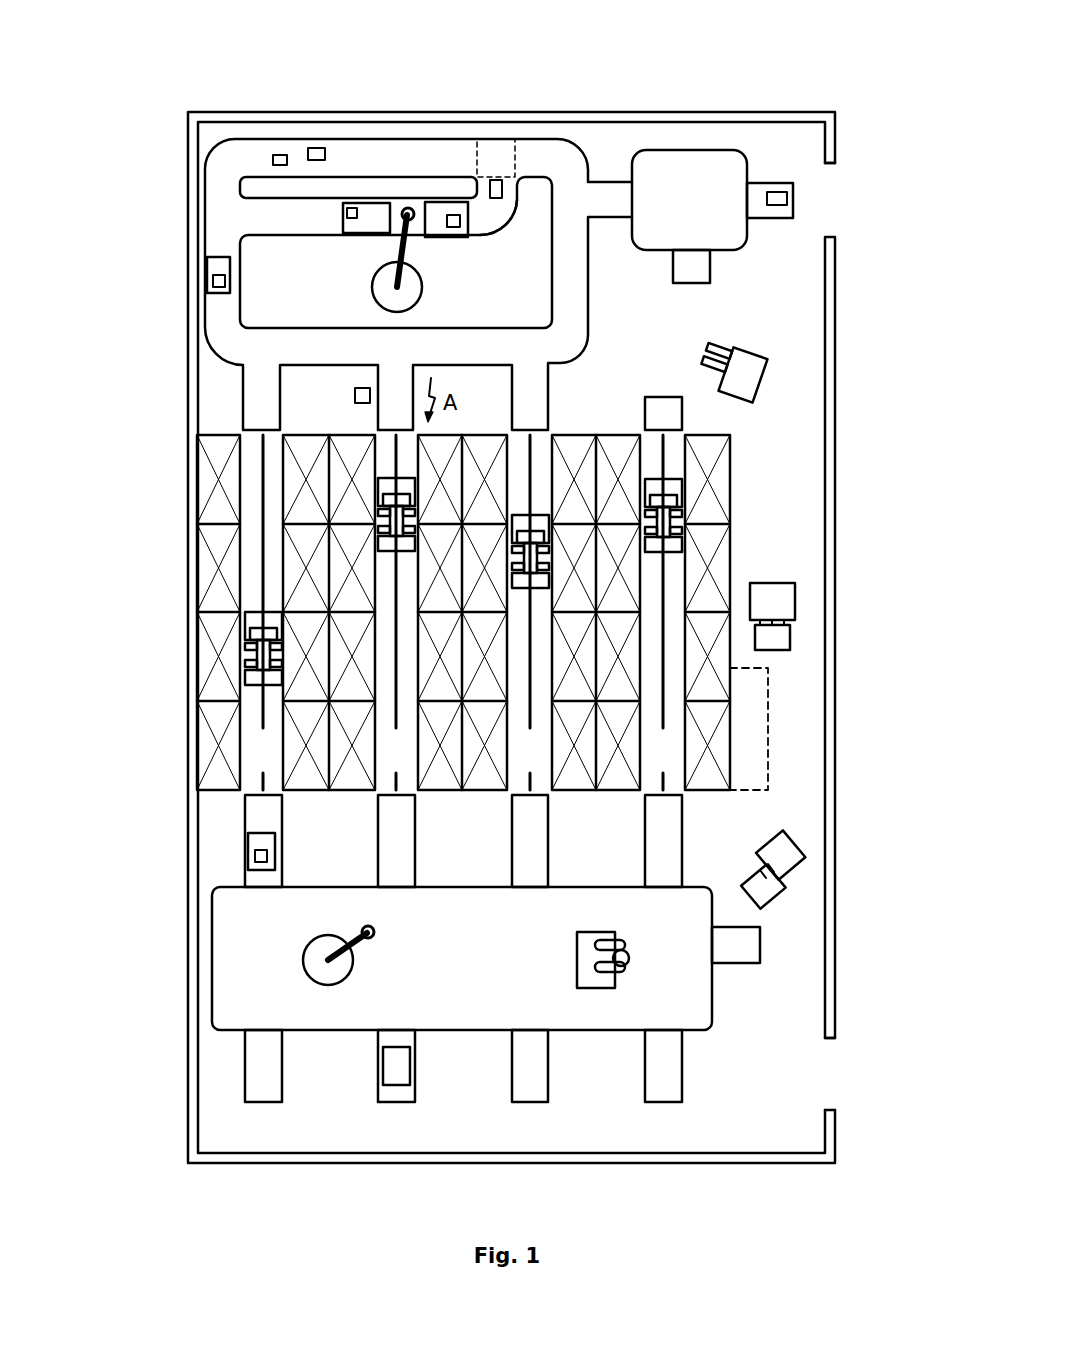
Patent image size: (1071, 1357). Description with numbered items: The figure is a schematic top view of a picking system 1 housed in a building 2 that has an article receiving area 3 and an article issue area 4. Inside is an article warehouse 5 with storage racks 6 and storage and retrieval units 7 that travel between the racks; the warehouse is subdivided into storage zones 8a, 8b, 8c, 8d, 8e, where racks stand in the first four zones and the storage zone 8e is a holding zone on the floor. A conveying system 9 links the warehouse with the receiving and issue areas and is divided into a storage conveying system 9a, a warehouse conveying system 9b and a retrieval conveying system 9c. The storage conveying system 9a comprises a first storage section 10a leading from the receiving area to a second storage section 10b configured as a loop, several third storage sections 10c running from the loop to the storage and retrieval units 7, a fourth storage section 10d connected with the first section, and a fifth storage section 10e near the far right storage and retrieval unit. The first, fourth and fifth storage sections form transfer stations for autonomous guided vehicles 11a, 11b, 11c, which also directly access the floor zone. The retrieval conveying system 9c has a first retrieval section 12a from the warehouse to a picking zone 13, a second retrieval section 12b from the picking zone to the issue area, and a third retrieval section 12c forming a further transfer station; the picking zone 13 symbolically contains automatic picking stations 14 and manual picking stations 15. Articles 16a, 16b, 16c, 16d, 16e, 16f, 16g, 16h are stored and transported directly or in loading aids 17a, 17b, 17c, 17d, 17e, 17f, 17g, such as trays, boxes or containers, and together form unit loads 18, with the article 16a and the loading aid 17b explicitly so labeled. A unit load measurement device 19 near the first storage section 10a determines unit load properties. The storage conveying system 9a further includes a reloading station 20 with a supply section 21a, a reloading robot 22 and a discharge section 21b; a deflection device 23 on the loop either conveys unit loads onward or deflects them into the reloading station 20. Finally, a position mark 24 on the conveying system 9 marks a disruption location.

The picking system 1 is at (908, 116).
The building 2 is at (190, 1133).
The article receiving area 3 is at (848, 193).
The article issue area 4 is at (848, 1073).
The article warehouse 5 is at (245, 560).
The storage racks 6 is at (207, 472).
The storage and retrieval units 7 is at (260, 680).
The storage zone 8a is at (276, 765).
The storage zone 8b is at (410, 765).
The storage zone 8c is at (544, 765).
The storage zone 8d is at (677, 765).
The storage zone 8e is at (762, 765).
The conveying system 9 is at (58, 222).
The storage conveying system 9a is at (123, 143).
The warehouse conveying system 9b is at (123, 440).
The retrieval conveying system 9c is at (123, 798).
The first storage section 10a is at (757, 196).
The second storage section 10b is at (218, 245).
The third storage sections 10c is at (252, 393).
The fourth storage section 10d is at (698, 262).
The fifth storage section 10e is at (650, 410).
The autonomous guided vehicle 11a is at (747, 366).
The autonomous guided vehicle 11b is at (782, 593).
The autonomous guided vehicle 11c is at (786, 848).
The first retrieval section 12a is at (255, 820).
The second retrieval section 12b is at (258, 1068).
The third retrieval section 12c is at (745, 942).
The picking zone 13 is at (480, 960).
The automatic picking stations 14 is at (322, 973).
The manual picking stations 15 is at (598, 985).
The article 16a is at (781, 196).
The article 16b is at (490, 178).
The article 16c is at (453, 227).
The article 16d is at (352, 210).
The article 16e is at (313, 150).
The article 16f is at (278, 156).
The article 16g is at (218, 279).
The article 16h is at (268, 857).
The loading aid 17a is at (438, 212).
The loading aid 17b is at (361, 228).
The loading aid 17c is at (213, 287).
The loading aid 17d is at (266, 843).
The loading aid 17e is at (780, 636).
The loading aid 17f is at (770, 886).
The loading aid 17g is at (400, 1062).
The unit load 18 is at (482, 54).
The unit load measurement device 19 is at (686, 172).
The reloading station 20 is at (399, 192).
The supply section 21a is at (485, 225).
The discharge section 21b is at (287, 217).
The reloading robot 22 is at (392, 293).
The deflection device 23 is at (500, 162).
The position mark 24 is at (355, 394).